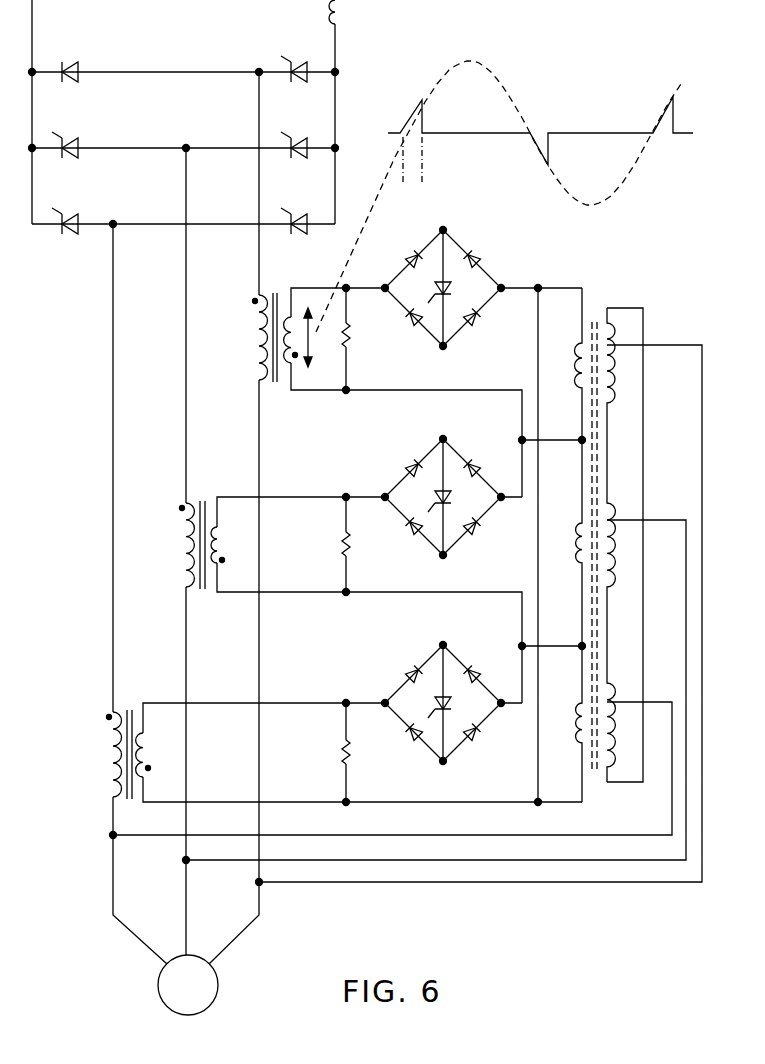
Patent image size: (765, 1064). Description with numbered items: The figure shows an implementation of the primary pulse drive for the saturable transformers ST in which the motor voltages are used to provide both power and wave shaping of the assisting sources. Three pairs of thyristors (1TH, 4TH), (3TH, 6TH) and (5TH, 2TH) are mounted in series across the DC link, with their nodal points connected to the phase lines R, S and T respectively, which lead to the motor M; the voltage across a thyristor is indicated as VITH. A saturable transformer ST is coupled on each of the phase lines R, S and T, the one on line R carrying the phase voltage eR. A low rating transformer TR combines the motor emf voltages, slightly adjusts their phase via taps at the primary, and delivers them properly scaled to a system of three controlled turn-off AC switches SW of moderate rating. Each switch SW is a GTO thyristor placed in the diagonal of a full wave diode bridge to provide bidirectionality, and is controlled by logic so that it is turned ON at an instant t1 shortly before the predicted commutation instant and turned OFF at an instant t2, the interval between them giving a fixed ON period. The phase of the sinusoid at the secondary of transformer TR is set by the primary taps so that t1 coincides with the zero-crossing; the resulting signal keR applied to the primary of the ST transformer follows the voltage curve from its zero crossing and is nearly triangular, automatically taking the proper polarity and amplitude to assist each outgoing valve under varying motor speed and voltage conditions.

The thyristor 1TH is at (62, 82).
The thyristor 2TH is at (291, 234).
The thyristor 3TH is at (62, 158).
The thyristor 4TH is at (291, 82).
The thyristor 5TH is at (62, 234).
The thyristor 6TH is at (291, 158).
The saturable transformer ST is at (189, 546).
The controlled turn-off AC switch SW is at (484, 371).
The low rating transformer TR is at (618, 296).
The motor M is at (188, 985).
The phase line R is at (236, 518).
The phase line S is at (179, 551).
The phase line T is at (139, 594).
The thyristor voltage VITH is at (38, 40).
The phase voltage eR is at (228, 290).
The assisting source voltage keR is at (408, 117).
The turn-on instant t1 is at (403, 173).
The turn-off instant t2 is at (423, 173).